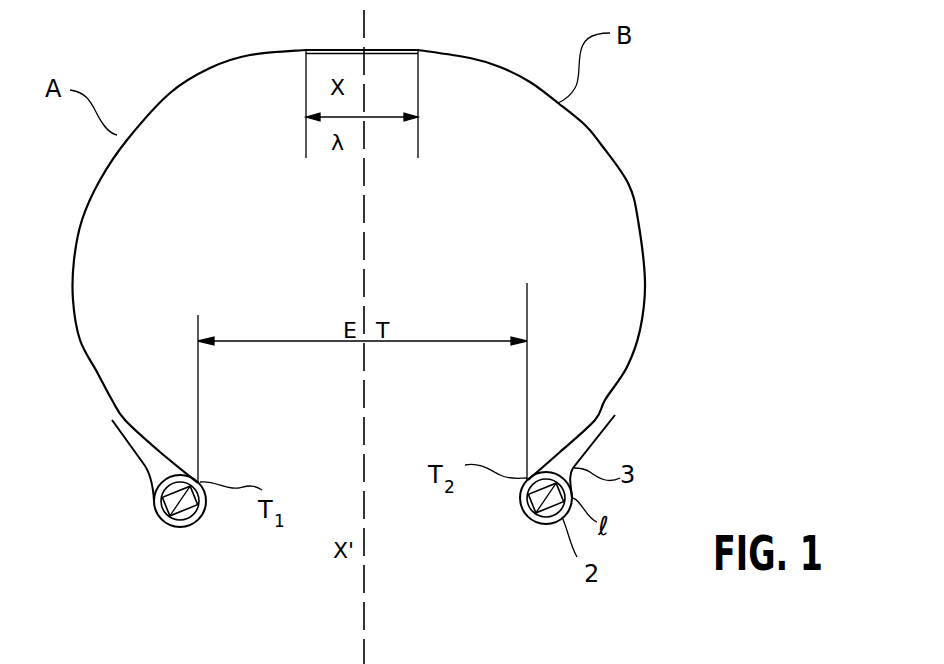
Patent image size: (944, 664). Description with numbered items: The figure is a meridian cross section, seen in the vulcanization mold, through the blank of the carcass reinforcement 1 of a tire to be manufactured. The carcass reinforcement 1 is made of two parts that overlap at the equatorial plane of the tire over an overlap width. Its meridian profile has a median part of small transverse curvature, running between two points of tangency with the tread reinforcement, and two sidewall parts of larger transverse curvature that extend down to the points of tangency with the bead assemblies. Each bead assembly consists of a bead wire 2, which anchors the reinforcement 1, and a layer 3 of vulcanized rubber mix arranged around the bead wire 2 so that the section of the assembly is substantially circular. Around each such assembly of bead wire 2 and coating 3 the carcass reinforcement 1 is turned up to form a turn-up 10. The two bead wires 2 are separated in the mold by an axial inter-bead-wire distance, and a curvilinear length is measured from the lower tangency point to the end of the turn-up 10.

The carcass reinforcement 1 is at (628, 183).
The bead wire 2 is at (181, 527).
The layer of vulcanized rubber mix 3 is at (168, 489).
The turn-up 10 is at (144, 463).